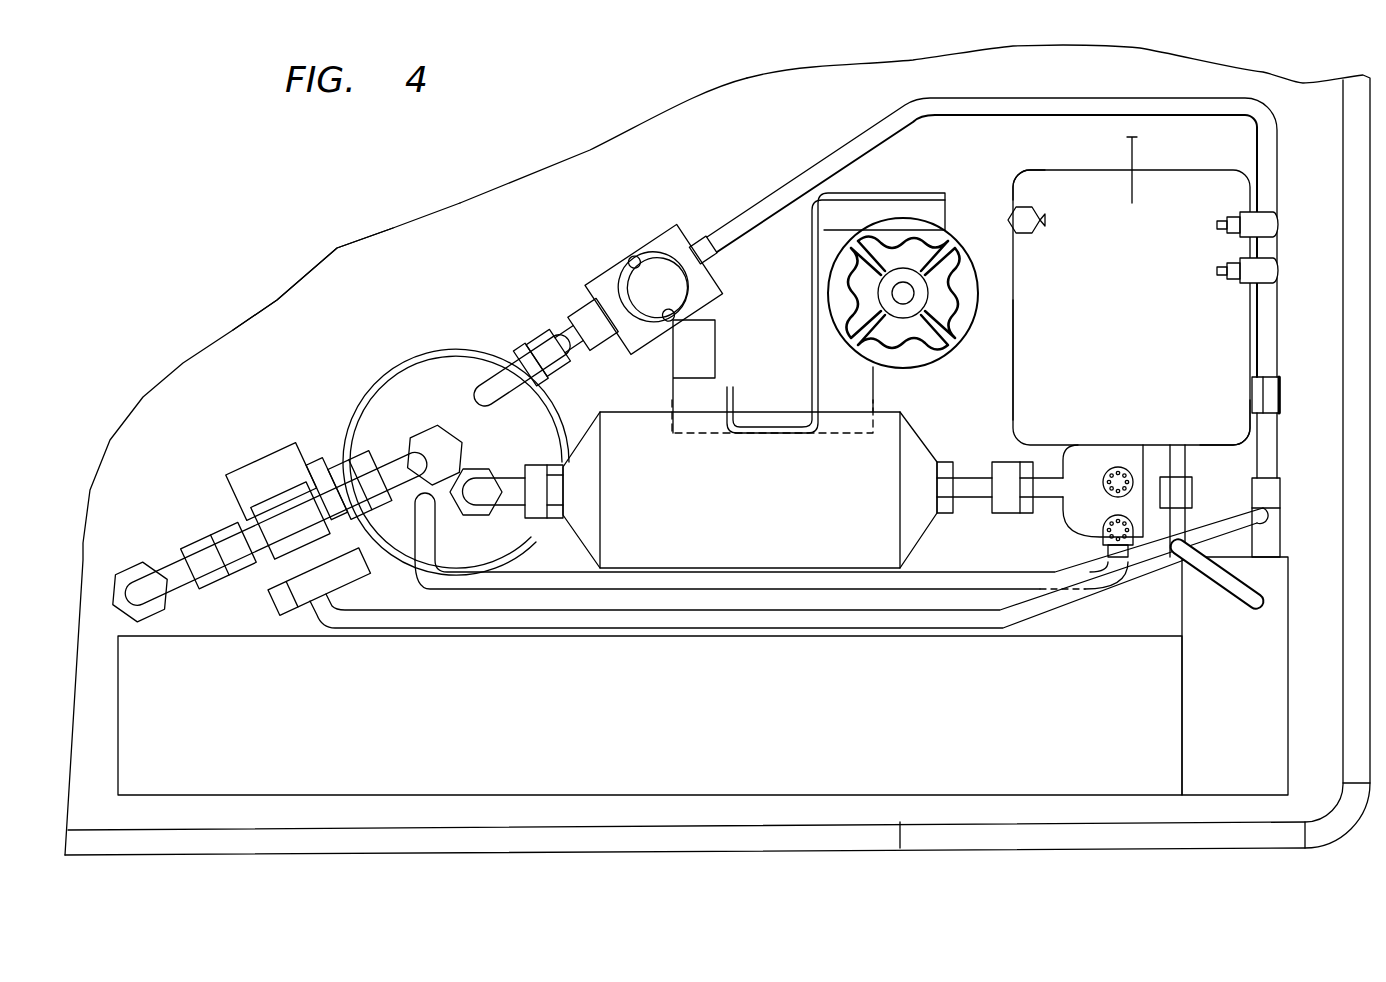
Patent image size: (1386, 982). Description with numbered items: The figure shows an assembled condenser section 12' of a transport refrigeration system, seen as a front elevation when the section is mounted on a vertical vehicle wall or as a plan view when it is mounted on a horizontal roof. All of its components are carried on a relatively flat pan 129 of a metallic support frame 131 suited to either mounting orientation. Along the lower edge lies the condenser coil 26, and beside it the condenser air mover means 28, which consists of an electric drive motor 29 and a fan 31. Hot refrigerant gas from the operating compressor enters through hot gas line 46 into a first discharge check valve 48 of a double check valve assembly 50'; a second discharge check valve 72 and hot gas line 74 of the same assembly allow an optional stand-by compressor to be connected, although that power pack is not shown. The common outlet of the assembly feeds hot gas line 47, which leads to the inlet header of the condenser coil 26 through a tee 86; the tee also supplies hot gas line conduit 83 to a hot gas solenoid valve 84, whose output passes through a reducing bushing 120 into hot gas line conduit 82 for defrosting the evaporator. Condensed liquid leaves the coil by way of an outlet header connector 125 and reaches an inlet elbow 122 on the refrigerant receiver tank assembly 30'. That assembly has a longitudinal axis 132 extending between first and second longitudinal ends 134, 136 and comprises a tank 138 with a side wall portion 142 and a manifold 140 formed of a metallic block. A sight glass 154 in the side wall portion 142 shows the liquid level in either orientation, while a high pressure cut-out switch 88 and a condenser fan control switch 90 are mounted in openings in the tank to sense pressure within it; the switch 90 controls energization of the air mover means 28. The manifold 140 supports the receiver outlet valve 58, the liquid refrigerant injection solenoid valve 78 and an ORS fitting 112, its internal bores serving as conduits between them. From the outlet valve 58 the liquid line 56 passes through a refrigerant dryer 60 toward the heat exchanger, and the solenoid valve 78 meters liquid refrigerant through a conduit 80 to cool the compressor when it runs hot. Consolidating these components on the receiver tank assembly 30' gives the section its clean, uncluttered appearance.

The condenser section 12' is at (717, 446).
The condenser coil 26 is at (681, 720).
The condenser air mover means 28 is at (950, 345).
The electric drive motor 29 is at (975, 234).
The refrigerant receiver tank assembly 30' is at (1131, 307).
The fan 31 is at (905, 335).
The hot gas line 46 is at (398, 458).
The hot gas line 47 is at (372, 628).
The first compressor discharge check valve 48 is at (330, 465).
The double check valve assembly 50' is at (296, 508).
The liquid line 56 is at (512, 488).
The receiver outlet valve 58 is at (1122, 467).
The refrigerant dryer 60 is at (733, 512).
The second discharge check valve 72 is at (212, 582).
The hot gas line 74 is at (173, 567).
The liquid refrigerant injection solenoid valve 78 is at (1097, 528).
The conduit 80 is at (545, 587).
The hot gas line conduit 82 is at (482, 408).
The hot gas line conduit 83 is at (706, 240).
The hot gas solenoid valve 84 is at (628, 258).
The tee 86 is at (1273, 512).
The high compressor pressure cut-out switch 88 is at (1253, 272).
The condenser fan control switch 90 is at (1248, 216).
The ORS fitting 112 is at (997, 513).
The reducing bushing 120 is at (532, 345).
The inlet elbow 122 is at (1165, 530).
The outlet header connector 125 is at (1232, 598).
The pan 129 is at (400, 245).
The metallic support frame 131 is at (515, 182).
The longitudinal axis 132 is at (1134, 148).
The first longitudinal end 134 is at (1102, 172).
The second longitudinal end 136 is at (1245, 446).
The tank 138 is at (1013, 183).
The manifold 140 is at (1066, 522).
The side wall portion 142 is at (1022, 380).
The sight glass 154 is at (1280, 392).